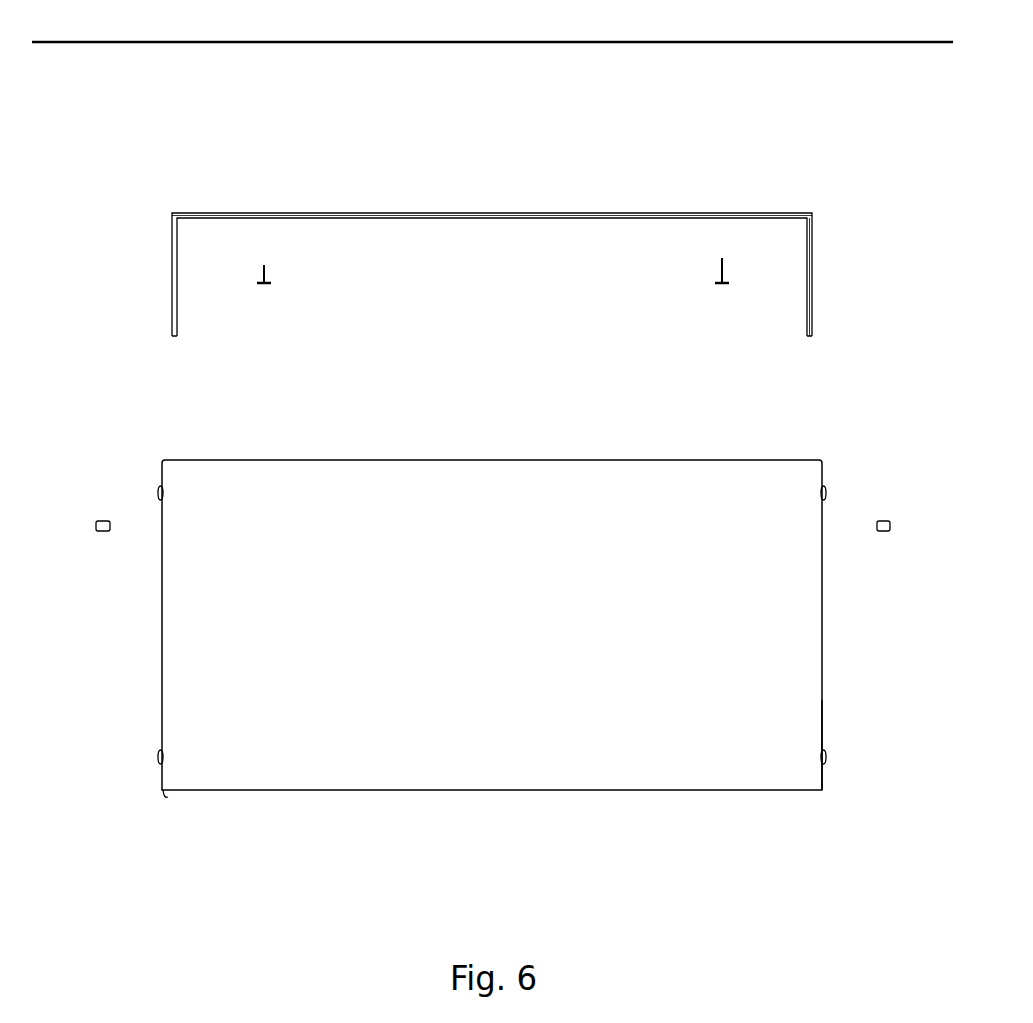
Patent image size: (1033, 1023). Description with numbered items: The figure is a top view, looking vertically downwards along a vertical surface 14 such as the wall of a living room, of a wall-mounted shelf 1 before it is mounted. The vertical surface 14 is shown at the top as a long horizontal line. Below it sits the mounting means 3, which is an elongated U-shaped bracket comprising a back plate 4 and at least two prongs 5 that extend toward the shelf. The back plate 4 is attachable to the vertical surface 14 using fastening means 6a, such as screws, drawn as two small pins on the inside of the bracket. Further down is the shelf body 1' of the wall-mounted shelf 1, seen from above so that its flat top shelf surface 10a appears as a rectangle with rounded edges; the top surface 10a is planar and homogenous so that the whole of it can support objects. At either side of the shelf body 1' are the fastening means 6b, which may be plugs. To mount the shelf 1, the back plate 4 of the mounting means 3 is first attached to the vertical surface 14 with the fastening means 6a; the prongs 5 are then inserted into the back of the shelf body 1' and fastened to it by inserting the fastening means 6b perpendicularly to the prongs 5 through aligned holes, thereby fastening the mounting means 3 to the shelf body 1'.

The vertical surface 14 is at (97, 44).
The mounting means 3 is at (477, 231).
The back plate 4 is at (440, 213).
The prongs 5 is at (810, 280).
The fastening means 6a is at (264, 265).
The fastening means 6b is at (101, 532).
The wall-mounted shelf 1 is at (538, 669).
The shelf body 1' is at (492, 656).
The top shelf surface 10a is at (808, 735).